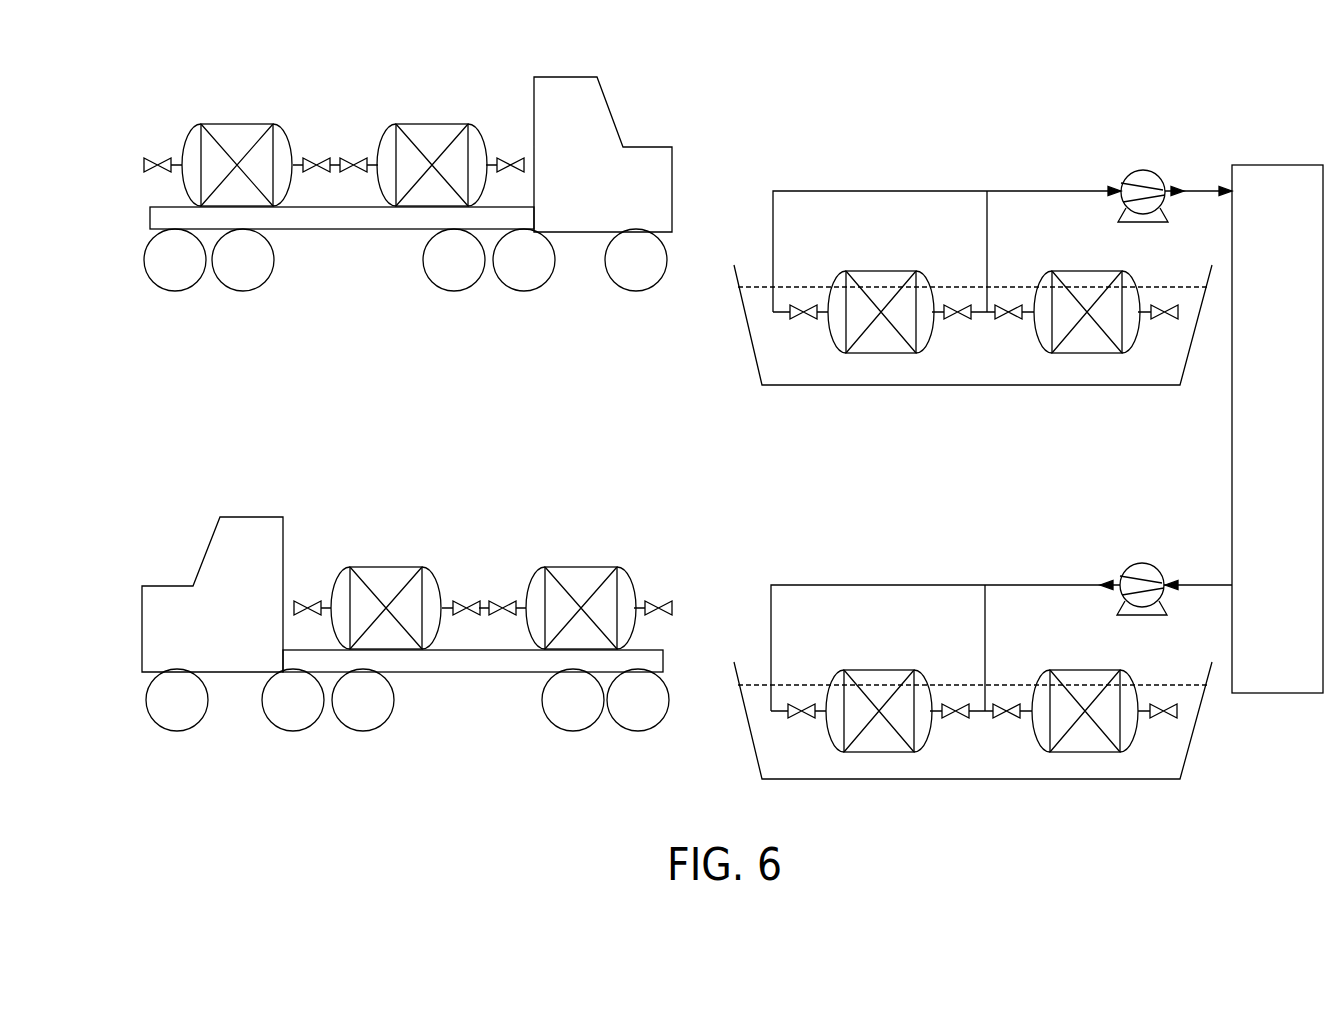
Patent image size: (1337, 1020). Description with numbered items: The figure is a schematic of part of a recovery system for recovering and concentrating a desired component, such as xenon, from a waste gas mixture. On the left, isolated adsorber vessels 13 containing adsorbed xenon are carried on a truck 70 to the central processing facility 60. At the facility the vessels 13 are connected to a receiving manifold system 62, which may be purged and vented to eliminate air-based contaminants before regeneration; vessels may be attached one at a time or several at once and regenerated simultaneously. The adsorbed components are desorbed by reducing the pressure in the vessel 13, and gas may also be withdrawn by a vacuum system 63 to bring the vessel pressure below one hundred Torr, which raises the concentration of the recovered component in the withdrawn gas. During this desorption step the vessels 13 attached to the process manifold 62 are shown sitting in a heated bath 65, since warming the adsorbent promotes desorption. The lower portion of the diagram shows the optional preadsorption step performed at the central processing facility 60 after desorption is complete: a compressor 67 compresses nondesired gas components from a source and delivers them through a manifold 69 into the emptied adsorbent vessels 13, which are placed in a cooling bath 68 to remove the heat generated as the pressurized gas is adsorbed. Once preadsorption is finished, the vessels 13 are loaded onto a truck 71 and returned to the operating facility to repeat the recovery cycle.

The adsorber vessel 13 is at (237, 120).
The truck 70 is at (580, 75).
The truck 71 is at (238, 517).
The receiving manifold system 62 is at (958, 188).
The vacuum system 63 is at (1143, 168).
The central processing facility 60 is at (1280, 163).
The heated bath 65 is at (937, 386).
The manifold 69 is at (956, 583).
The compressor 67 is at (1145, 560).
The cooling bath 68 is at (935, 780).